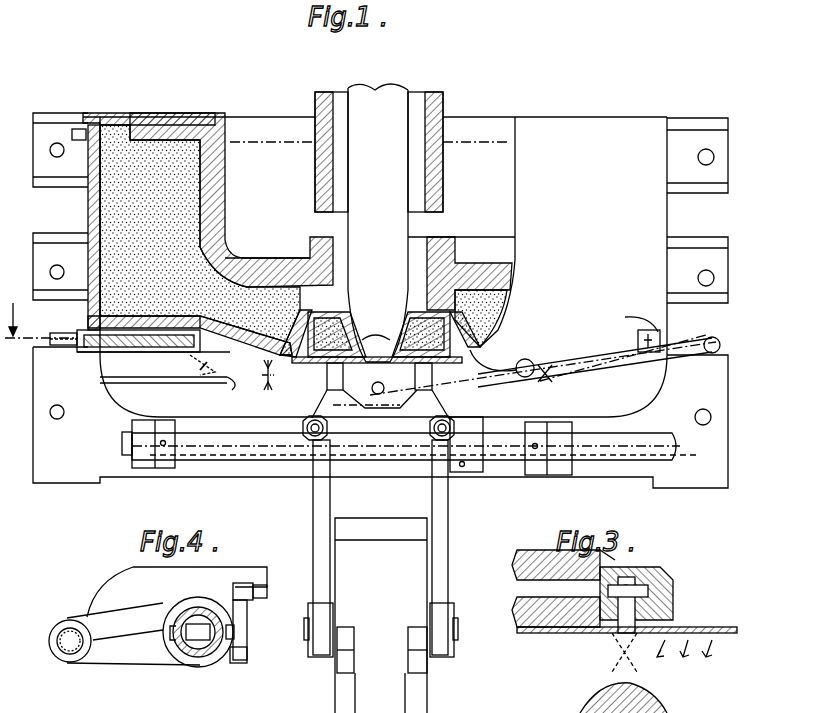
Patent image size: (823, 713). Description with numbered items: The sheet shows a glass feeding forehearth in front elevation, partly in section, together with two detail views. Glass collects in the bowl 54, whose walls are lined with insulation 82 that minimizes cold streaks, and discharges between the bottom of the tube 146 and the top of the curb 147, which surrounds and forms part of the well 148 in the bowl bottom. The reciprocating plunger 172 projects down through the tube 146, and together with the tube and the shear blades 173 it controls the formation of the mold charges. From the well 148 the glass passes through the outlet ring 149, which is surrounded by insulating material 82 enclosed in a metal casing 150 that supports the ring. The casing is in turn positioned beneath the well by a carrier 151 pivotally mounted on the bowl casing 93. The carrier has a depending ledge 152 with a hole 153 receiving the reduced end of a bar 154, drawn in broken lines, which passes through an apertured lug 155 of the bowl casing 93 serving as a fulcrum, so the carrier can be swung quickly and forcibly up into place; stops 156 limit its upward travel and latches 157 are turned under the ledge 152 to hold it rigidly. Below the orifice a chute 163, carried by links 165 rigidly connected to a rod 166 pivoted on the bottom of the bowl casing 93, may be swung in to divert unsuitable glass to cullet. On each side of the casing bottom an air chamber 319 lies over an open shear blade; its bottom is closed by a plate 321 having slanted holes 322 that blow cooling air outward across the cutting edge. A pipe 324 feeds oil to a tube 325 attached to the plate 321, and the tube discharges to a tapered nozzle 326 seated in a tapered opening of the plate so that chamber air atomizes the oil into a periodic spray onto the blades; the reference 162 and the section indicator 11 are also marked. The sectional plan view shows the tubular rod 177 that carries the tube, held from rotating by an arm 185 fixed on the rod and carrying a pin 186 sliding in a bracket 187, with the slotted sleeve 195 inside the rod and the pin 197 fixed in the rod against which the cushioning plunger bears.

In FIG. 1, the section line 11 is at (40, 309).
In FIG. 1, the bowl 54 is at (214, 201).
In FIG. 1, the insulation 82 is at (110, 206).
In FIG. 1, the bowl casing 93 is at (563, 128).
In FIG. 1, the tube 146 is at (440, 116).
In FIG. 1, the curb 147 is at (440, 252).
In FIG. 1, the well 148 is at (313, 250).
In FIG. 1, the outlet ring 149 is at (333, 342).
In FIG. 1, the metal casing 150 is at (500, 320).
In FIG. 1, the carrier 151 is at (478, 349).
In FIG. 1, the depending ledge 152 is at (402, 410).
In FIG. 1, the hole 153 is at (376, 393).
In FIG. 1, the bar 154 is at (617, 370).
In FIG. 1, the apertured lug 155 is at (576, 372).
In FIG. 1, the stops 156 is at (327, 390).
In FIG. 1, the latches 157 is at (278, 430).
In FIG. 1, the gap dimension 162 is at (268, 387).
In FIG. 1, the chute 163 is at (410, 562).
In FIG. 1, the links 165 is at (313, 519).
In FIG. 1, the rod 166 is at (650, 438).
In FIG. 1, the reciprocating plunger 172 is at (403, 159).
In FIG. 1, the shear blades 173 is at (200, 386).
In FIG. 4, the tubular rod 177 is at (210, 655).
In FIG. 4, the arm 185 is at (133, 655).
In FIG. 4, the pin 186 is at (58, 650).
In FIG. 4, the bracket 187 is at (63, 620).
In FIG. 4, the sleeve 195 is at (195, 650).
In FIG. 4, the pin 197 is at (197, 625).
In FIG. 1, the air chamber 319 is at (233, 380).
In FIG. 1, the plate 321 is at (100, 350).
In FIG. 3, the plate 321 is at (575, 633).
In FIG. 3, the holes 322 is at (712, 627).
In FIG. 1, the pipe 324 is at (57, 333).
In FIG. 1, the tube 325 is at (86, 405).
In FIG. 3, the tube 325 is at (522, 555).
In FIG. 1, the nozzle 326 is at (200, 318).
In FIG. 3, the nozzle 326 is at (640, 570).